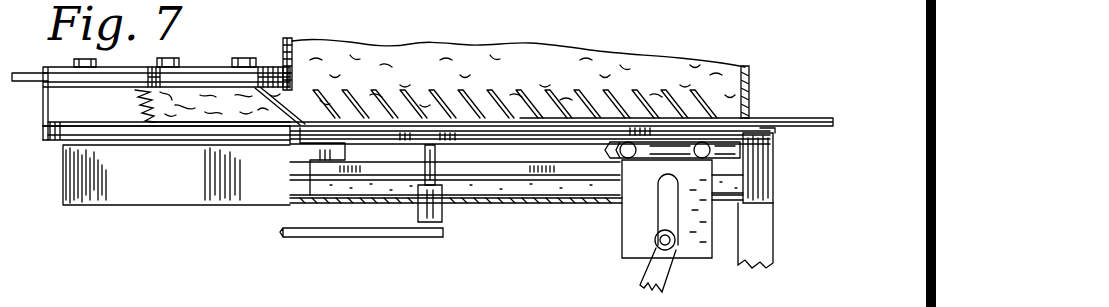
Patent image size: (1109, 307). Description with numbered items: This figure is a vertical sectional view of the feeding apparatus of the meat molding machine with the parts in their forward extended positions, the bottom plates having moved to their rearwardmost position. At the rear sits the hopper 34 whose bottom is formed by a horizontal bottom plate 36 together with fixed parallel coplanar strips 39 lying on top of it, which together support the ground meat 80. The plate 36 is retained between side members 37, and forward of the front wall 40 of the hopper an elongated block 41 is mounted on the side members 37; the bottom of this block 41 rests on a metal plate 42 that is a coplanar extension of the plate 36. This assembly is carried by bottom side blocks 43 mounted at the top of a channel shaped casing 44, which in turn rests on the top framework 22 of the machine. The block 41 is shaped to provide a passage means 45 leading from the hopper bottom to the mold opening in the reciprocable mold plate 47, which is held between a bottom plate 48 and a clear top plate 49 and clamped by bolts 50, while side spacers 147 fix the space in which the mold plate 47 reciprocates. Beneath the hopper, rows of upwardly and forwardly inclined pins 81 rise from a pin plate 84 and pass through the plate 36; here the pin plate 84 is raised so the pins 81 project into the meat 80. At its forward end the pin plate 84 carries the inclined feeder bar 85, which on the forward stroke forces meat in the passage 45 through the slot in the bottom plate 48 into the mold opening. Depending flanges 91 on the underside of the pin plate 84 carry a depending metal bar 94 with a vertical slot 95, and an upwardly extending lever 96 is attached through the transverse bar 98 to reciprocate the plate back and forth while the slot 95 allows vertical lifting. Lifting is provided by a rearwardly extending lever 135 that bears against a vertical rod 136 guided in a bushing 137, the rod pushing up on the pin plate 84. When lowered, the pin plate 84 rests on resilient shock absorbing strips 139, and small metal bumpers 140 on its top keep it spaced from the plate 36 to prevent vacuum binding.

The top framework 22 is at (760, 238).
The hopper 34 is at (750, 78).
The bottom plate 36 is at (786, 118).
The side members 37 is at (772, 134).
The parallel coplanar strips 39 is at (578, 100).
The front wall 40 is at (288, 38).
The elongated block 41 is at (122, 116).
The metal plate 42 is at (170, 125).
The bottom side blocks 43 is at (116, 145).
The channel shaped casing 44 is at (75, 178).
The passage means 45 is at (222, 112).
The mold plate 47 is at (31, 72).
The bottom plate 48 is at (70, 85).
The top plate 49 is at (200, 67).
The bolts 50 is at (163, 58).
The ground meat 80 is at (424, 79).
The pins 81 is at (468, 92).
The pin plate 84 is at (487, 137).
The feeder bar 85 is at (262, 103).
The depending flanges 91 is at (318, 163).
The depending metal bar 94 is at (652, 224).
The vertical slot 95 is at (674, 208).
The lever 96 is at (665, 280).
The transverse bar 98 is at (655, 243).
The lever 135 is at (335, 237).
The vertical rod 136 is at (425, 172).
The bushing 137 is at (440, 215).
The shock absorbing strips 139 is at (578, 185).
The bumpers 140 is at (380, 135).
The side spacers 147 is at (217, 77).